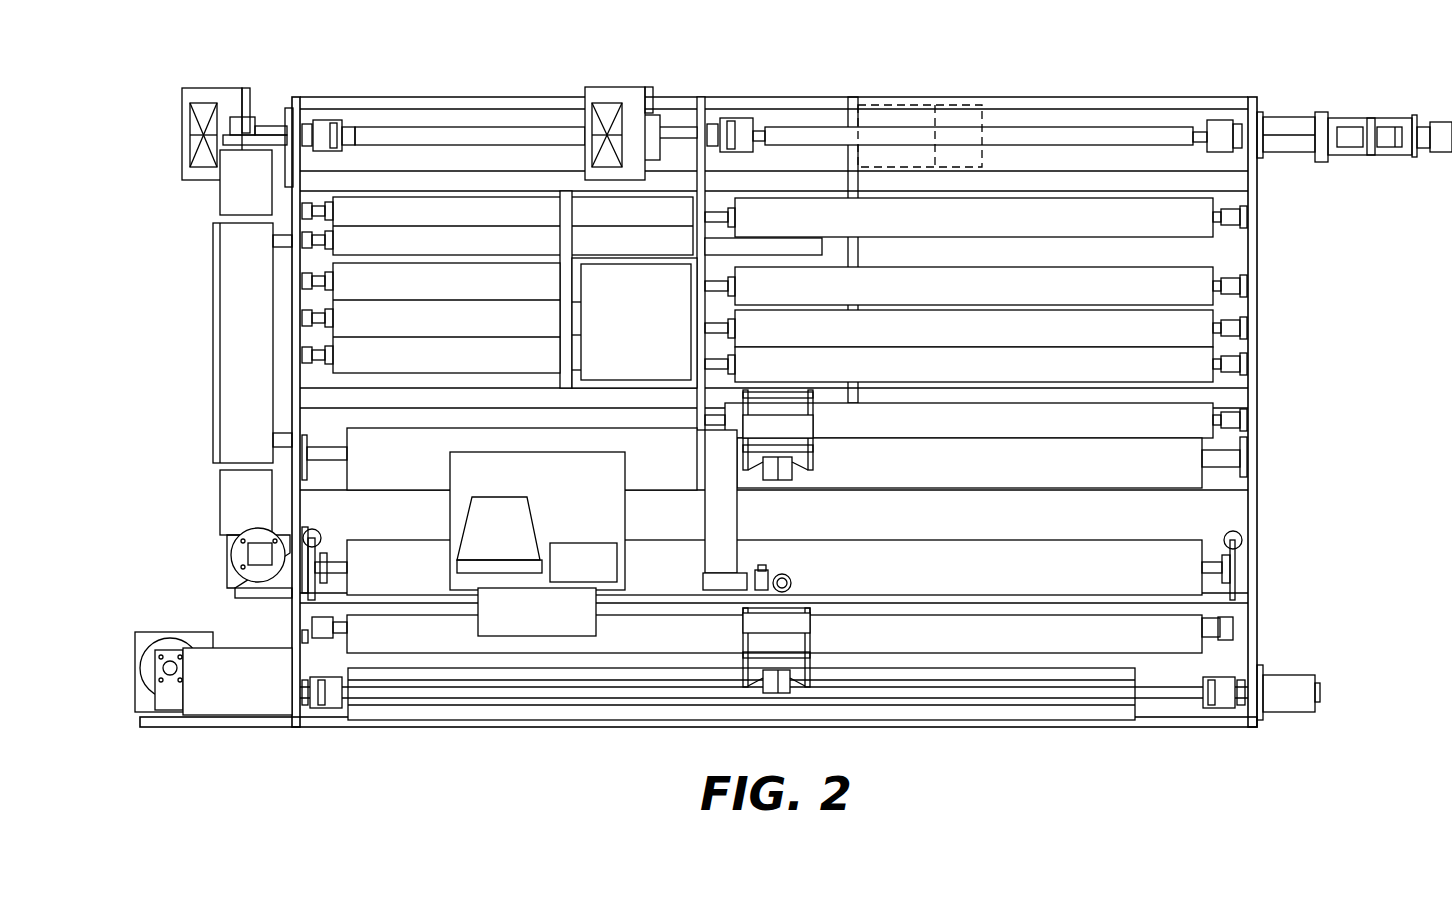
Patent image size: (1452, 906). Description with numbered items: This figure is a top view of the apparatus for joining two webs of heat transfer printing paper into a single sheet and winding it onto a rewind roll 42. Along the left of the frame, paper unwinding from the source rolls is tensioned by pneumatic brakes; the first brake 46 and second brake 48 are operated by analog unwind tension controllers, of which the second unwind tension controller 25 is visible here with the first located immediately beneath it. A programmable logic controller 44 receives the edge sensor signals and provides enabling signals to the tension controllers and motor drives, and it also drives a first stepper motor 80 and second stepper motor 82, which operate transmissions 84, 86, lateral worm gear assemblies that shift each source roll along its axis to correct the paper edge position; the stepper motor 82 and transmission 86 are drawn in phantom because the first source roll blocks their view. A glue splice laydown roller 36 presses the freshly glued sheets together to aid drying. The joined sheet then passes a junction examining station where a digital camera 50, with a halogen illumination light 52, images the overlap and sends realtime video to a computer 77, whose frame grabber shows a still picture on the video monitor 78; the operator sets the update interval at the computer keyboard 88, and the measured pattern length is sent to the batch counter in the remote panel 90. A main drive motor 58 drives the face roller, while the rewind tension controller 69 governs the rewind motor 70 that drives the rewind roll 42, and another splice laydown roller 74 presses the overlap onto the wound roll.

The second unwind tension controller 25 is at (250, 180).
The glue splice laydown roller 36 is at (784, 470).
The rewind roll 42 is at (1000, 716).
The programmable logic controller 44 is at (245, 364).
The first brake 46 is at (612, 95).
The second brake 48 is at (217, 95).
The digital camera 50 is at (763, 566).
The halogen illumination light 52 is at (792, 583).
The main drive motor 58 is at (228, 568).
The rewind tension controller 69 is at (237, 501).
The rewind motor 70 is at (172, 632).
The splice laydown roller 74 is at (788, 680).
The computer 77 is at (622, 344).
The video monitor 78 is at (504, 525).
The first stepper motor 80 is at (1445, 155).
The second stepper motor 82 is at (965, 102).
The transmission 84 is at (1352, 118).
The transmission 86 is at (902, 102).
The computer keyboard 88 is at (506, 612).
The remote panel 90 is at (586, 572).